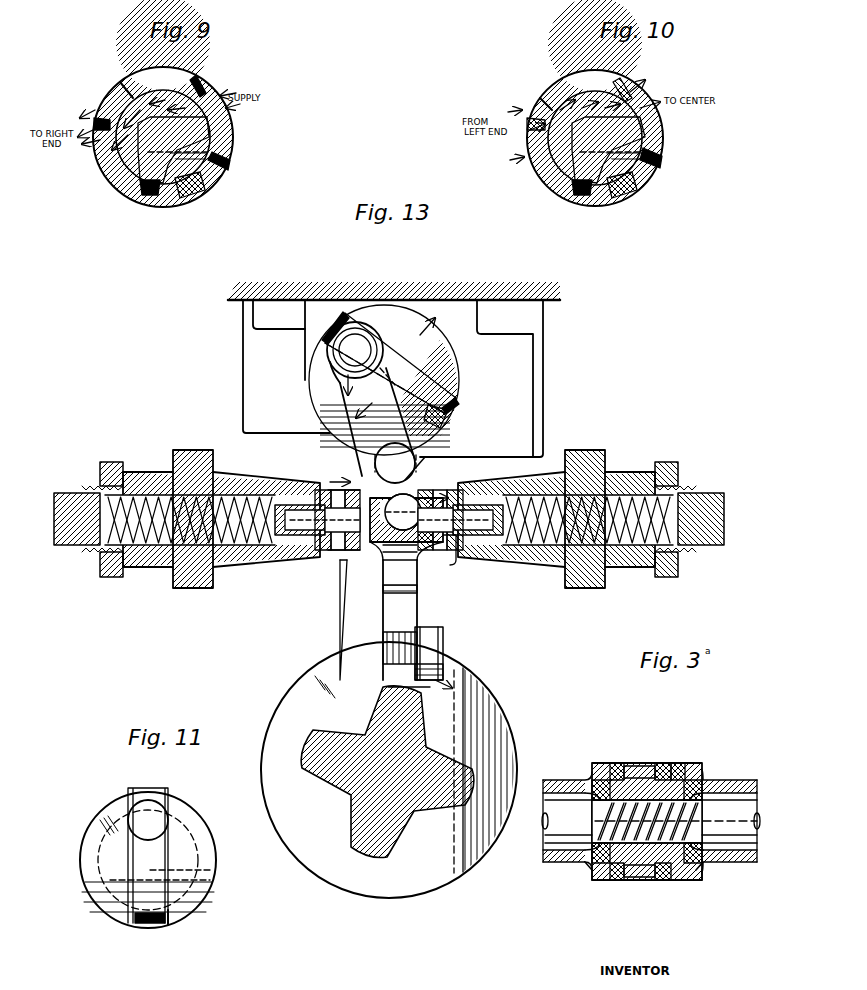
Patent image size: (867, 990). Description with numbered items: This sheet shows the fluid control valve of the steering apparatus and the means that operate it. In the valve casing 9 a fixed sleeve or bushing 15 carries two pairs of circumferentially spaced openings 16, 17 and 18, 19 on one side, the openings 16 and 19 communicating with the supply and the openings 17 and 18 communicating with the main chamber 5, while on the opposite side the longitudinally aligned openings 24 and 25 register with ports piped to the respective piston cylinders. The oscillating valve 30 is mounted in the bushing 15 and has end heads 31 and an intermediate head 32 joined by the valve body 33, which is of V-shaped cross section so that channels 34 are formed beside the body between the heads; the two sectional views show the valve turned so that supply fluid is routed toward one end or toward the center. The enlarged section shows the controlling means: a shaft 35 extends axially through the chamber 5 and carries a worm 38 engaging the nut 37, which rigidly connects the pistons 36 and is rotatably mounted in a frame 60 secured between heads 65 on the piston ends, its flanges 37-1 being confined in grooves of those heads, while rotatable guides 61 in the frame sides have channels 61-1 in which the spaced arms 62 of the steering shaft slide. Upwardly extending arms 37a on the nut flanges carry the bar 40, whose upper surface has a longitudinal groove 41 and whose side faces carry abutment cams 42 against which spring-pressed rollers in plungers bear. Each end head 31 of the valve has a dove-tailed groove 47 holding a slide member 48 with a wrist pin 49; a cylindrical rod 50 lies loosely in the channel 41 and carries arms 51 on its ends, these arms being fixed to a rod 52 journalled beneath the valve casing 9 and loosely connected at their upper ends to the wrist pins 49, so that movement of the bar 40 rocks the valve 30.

In FIG. 13, the main chamber 5 is at (385, 502).
In FIG. 3A, the main chamber 5 is at (650, 814).
In FIG. 13, the valve casing 9 is at (300, 384).
In FIG. 9, the sleeve or bushing 15 is at (125, 196).
In FIG. 10, the sleeve or bushing 15 is at (550, 195).
In FIG. 13, the sleeve or bushing 15 is at (340, 350).
In FIG. 11, the sleeve or bushing 15 is at (210, 826).
In FIG. 9, the opening 16 is at (208, 92).
In FIG. 9, the opening 17 is at (210, 170).
In FIG. 10, the opening 18 is at (630, 95).
In FIG. 10, the opening 19 is at (658, 158).
In FIG. 10, the opening 24 is at (530, 160).
In FIG. 9, the opening 25 is at (98, 148).
In FIG. 9, the oscillating valve 30 is at (150, 195).
In FIG. 10, the oscillating valve 30 is at (582, 195).
In FIG. 11, the oscillating valve 30 is at (102, 812).
In FIG. 10, the end head 31 is at (545, 98).
In FIG. 13, the end head 31 is at (440, 345).
In FIG. 11, the end head 31 is at (170, 812).
In FIG. 9, the intermediate head 32 is at (124, 84).
In FIG. 9, the valve body 33 is at (210, 135).
In FIG. 10, the valve body 33 is at (570, 130).
In FIG. 11, the valve body 33 is at (88, 878).
In FIG. 9, the channel 34 is at (188, 198).
In FIG. 10, the channel 34 is at (622, 198).
In FIG. 11, the channel 34 is at (212, 872).
In FIG. 13, the shaft 35 is at (330, 793).
In FIG. 3A, the shaft 35 is at (730, 805).
In FIG. 3A, the piston 36 is at (568, 862).
In FIG. 13, the nut 37 is at (470, 738).
In FIG. 3A, the nut 37 is at (590, 866).
In FIG. 13, the arm 37a is at (352, 612).
In FIG. 13, the flange 37-1 is at (312, 676).
In FIG. 3A, the flange 37-1 is at (722, 898).
In FIG. 13, the worm 38 is at (430, 720).
In FIG. 3A, the worm 38 is at (678, 763).
In FIG. 13, the bar 40 is at (417, 588).
In FIG. 13, the groove or channel 41 is at (380, 542).
In FIG. 13, the abutment cam 42 is at (452, 565).
In FIG. 13, the groove 47 is at (452, 405).
In FIG. 11, the groove 47 is at (168, 925).
In FIG. 13, the slide member 48 is at (446, 414).
In FIG. 11, the slide member 48 is at (140, 924).
In FIG. 13, the wrist pin 49 is at (355, 350).
In FIG. 11, the wrist pin 49 is at (150, 820).
In FIG. 13, the cylindrical rod 50 is at (424, 478).
In FIG. 13, the arm 51 is at (370, 410).
In FIG. 13, the rod 52 is at (430, 446).
In FIG. 3A, the frame 60 is at (612, 882).
In FIG. 3A, the rotatable guide 61 is at (660, 763).
In FIG. 3A, the channel 61-1 is at (616, 763).
In FIG. 3A, the arm 62 is at (640, 766).
In FIG. 3A, the head 65 is at (598, 878).